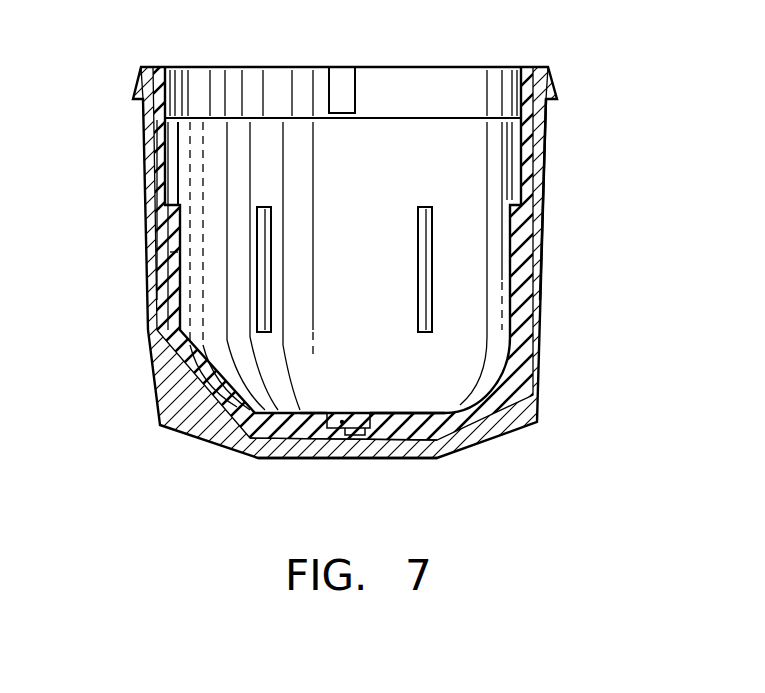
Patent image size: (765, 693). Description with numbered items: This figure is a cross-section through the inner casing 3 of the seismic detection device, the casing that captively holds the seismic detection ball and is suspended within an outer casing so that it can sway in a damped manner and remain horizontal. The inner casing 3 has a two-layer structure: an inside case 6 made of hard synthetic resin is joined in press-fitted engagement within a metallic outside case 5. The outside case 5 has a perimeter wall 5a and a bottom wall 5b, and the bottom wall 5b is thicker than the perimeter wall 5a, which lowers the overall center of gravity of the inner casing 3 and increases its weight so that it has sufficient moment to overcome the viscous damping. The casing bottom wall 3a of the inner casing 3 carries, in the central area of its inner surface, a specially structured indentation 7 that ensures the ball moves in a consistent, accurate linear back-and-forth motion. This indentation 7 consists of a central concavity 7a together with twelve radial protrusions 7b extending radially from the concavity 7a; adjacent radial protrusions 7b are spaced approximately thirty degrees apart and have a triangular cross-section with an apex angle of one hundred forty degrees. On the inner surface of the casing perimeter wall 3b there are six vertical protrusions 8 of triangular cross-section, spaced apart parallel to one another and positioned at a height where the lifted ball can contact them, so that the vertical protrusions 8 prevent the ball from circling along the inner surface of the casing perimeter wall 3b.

The inner casing 3 is at (575, 158).
The casing bottom wall 3a is at (400, 460).
The casing perimeter wall 3b is at (550, 243).
The outside case 5 is at (152, 166).
The perimeter wall 5a is at (145, 212).
The bottom wall 5b is at (283, 460).
The inside case 6 is at (172, 168).
The indentation 7 is at (387, 412).
The concavity 7a is at (347, 430).
The radial protrusions 7b is at (330, 412).
The vertical protrusions 8 is at (258, 240).